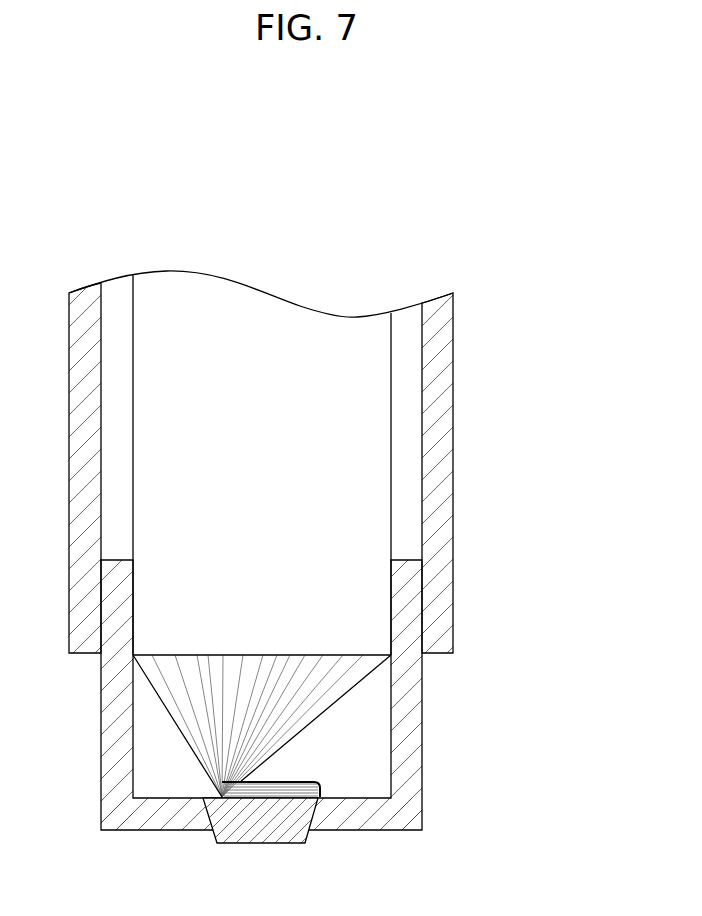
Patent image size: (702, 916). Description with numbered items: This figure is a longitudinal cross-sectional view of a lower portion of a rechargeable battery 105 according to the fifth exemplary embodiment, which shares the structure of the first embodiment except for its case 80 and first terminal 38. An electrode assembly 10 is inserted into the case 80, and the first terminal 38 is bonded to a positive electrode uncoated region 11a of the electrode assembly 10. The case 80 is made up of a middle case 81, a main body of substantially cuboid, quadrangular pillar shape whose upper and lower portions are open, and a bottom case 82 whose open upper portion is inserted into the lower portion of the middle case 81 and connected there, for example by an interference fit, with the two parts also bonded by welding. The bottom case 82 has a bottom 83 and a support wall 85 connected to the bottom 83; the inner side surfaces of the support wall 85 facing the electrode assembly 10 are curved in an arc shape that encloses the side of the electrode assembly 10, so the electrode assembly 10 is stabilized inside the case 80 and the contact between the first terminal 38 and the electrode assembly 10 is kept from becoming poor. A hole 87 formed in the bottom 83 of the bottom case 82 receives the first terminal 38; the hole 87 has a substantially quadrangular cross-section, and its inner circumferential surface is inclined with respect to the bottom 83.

The rechargeable battery 105 is at (293, 211).
The electrode assembly 10 is at (393, 418).
The case 80 is at (309, 599).
The middle case 81 is at (442, 622).
The bottom case 82 is at (290, 737).
The bottom 83 is at (157, 823).
The support wall 85 is at (112, 737).
The positive electrode uncoated region 11a is at (288, 731).
The first terminal 38 is at (235, 829).
The hole 87 is at (312, 813).